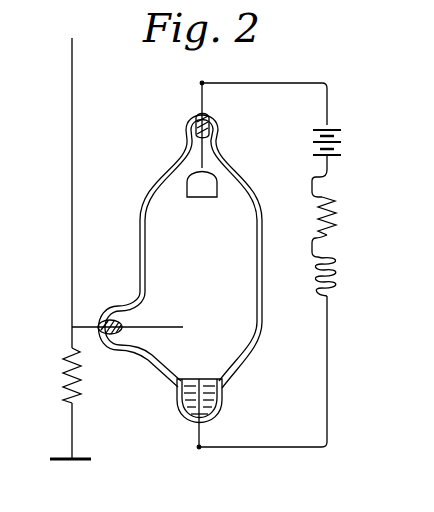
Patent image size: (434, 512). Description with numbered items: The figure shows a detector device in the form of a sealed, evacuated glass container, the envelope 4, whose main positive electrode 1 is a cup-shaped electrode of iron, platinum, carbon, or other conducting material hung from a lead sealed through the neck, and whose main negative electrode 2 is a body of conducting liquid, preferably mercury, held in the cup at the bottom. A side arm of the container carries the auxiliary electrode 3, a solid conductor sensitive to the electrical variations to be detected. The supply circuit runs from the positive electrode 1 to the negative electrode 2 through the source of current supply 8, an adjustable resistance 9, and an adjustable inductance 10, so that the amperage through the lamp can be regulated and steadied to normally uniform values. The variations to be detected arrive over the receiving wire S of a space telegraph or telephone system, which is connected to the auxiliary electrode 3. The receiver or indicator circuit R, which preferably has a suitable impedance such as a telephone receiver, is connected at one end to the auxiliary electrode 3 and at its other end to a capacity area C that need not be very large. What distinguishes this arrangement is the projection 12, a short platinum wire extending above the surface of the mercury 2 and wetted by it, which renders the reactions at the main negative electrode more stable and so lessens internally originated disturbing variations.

The positive electrode 1 is at (202, 140).
The negative electrode 2 is at (217, 385).
The auxiliary electrode 3 is at (127, 319).
The glass envelope 4 is at (262, 268).
The source of current supply 8 is at (338, 150).
The adjustable resistance 9 is at (334, 214).
The adjustable inductance 10 is at (340, 277).
The projection 12 is at (199, 379).
The receiving wire S is at (59, 193).
The receiver or indicator circuit R is at (58, 375).
The capacity area C is at (70, 445).